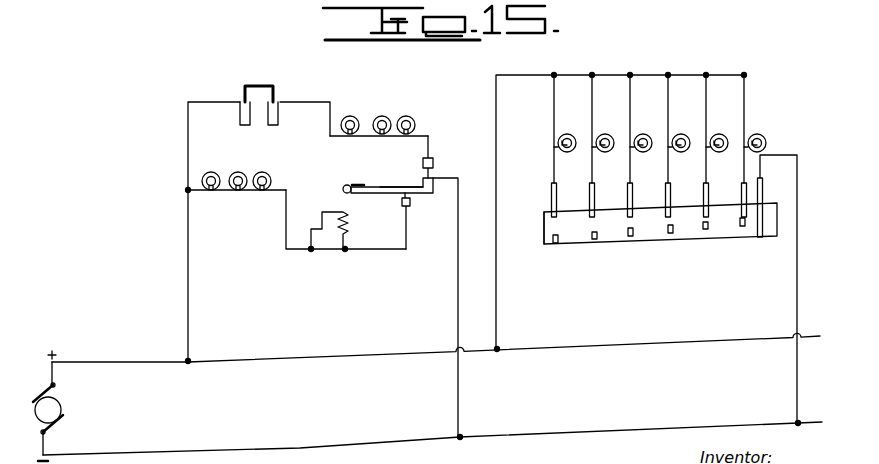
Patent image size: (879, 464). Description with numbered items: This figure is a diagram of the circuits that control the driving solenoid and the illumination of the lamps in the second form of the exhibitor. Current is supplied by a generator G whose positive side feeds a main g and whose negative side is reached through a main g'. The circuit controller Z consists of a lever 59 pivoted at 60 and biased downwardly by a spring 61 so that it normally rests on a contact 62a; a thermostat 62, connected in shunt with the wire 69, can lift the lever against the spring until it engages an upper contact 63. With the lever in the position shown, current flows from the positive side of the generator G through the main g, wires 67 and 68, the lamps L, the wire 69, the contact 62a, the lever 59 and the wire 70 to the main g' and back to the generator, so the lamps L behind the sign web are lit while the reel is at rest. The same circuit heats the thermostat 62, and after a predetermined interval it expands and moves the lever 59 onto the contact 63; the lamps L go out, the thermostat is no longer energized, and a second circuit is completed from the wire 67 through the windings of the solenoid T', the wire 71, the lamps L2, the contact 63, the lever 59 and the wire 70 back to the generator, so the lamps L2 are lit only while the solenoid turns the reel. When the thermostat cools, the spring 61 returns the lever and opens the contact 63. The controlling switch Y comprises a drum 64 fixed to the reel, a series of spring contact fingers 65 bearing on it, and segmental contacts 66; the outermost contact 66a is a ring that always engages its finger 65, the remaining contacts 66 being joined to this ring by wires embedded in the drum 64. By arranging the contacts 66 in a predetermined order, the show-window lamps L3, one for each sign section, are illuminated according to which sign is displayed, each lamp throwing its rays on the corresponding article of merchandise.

The solenoid T' is at (259, 91).
The wire 71 is at (314, 99).
The lamps L2 is at (380, 113).
The lamps L is at (232, 173).
The lamps L3 is at (722, 136).
The contact 63 is at (434, 166).
The wire 68 is at (190, 193).
The wire 69 is at (285, 226).
The thermostat 62 is at (352, 216).
The pivot 60 is at (343, 190).
The circuit controller Z is at (382, 178).
The spring 61 is at (352, 186).
The lever 59 is at (388, 185).
The contact 62a is at (411, 204).
The wire 70 is at (457, 258).
The wire 67 is at (186, 272).
The main g is at (434, 359).
The main g' is at (430, 443).
The generator G is at (56, 405).
The spring contact fingers 65 is at (549, 192).
The ring contact 66a is at (762, 238).
The segmental contacts 66 is at (597, 244).
The drum 64 is at (548, 246).
The controlling switch Y is at (652, 244).